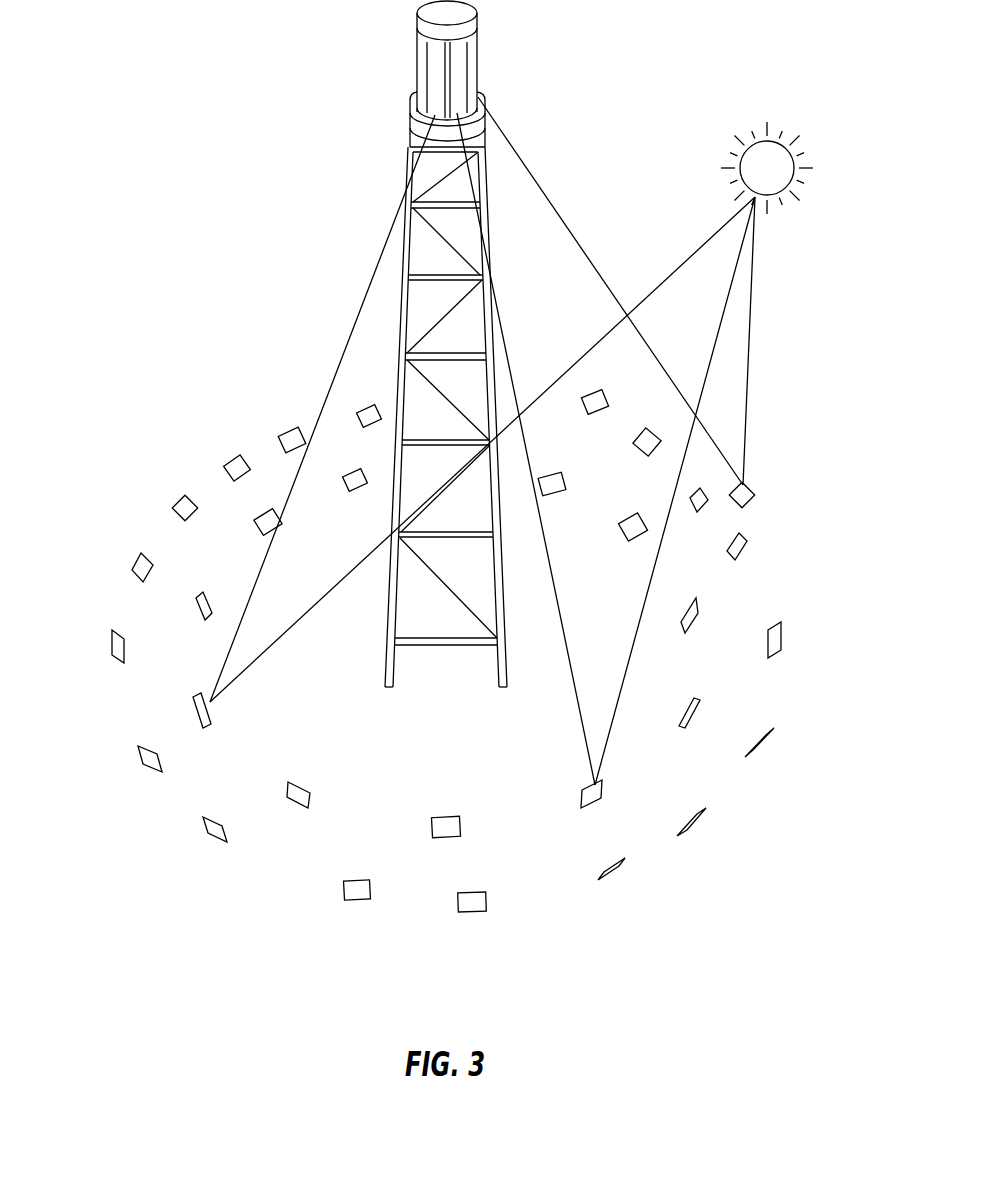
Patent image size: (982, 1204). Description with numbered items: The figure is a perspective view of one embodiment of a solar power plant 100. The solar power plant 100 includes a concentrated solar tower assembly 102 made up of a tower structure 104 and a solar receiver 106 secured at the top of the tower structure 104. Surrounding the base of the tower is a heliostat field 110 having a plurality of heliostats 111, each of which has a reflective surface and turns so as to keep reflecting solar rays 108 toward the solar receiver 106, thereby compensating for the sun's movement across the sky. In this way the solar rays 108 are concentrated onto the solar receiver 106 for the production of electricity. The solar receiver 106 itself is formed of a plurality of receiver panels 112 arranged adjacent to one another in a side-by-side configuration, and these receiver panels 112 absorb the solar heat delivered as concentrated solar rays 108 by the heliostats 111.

The solar power plant 100 is at (706, 68).
The concentrated solar tower assembly 102 is at (393, 144).
The tower structure 104 is at (403, 268).
The solar receiver 106 is at (408, 82).
The solar rays 108 is at (667, 278).
The heliostat field 110 is at (112, 546).
The heliostats 111 is at (203, 735).
The receiver panels 112 is at (453, 82).